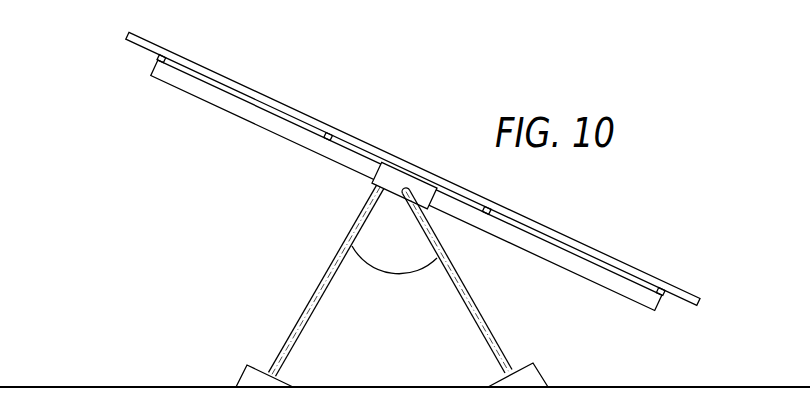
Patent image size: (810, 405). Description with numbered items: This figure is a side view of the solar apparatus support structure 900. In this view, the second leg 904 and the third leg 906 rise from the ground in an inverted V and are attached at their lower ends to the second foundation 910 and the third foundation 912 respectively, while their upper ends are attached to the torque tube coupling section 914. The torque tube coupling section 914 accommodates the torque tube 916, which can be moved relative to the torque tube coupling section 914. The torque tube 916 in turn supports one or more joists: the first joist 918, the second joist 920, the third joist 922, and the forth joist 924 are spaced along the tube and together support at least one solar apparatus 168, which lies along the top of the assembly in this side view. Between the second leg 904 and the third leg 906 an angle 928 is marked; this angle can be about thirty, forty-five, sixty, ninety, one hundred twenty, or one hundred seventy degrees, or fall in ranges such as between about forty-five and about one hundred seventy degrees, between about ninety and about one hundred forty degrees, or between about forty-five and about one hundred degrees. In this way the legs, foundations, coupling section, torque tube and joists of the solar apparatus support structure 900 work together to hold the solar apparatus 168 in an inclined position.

The solar apparatus support structure 900 is at (377, 116).
The solar apparatus 168 is at (604, 252).
The torque tube 916 is at (188, 84).
The first joist 918 is at (160, 60).
The second joist 920 is at (329, 133).
The third joist 922 is at (489, 208).
The forth joist 924 is at (659, 294).
The torque tube coupling section 914 is at (422, 187).
The second leg 904 is at (355, 222).
The third leg 906 is at (475, 323).
The second foundation 910 is at (250, 378).
The third foundation 912 is at (528, 373).
The angle 928 is at (367, 267).